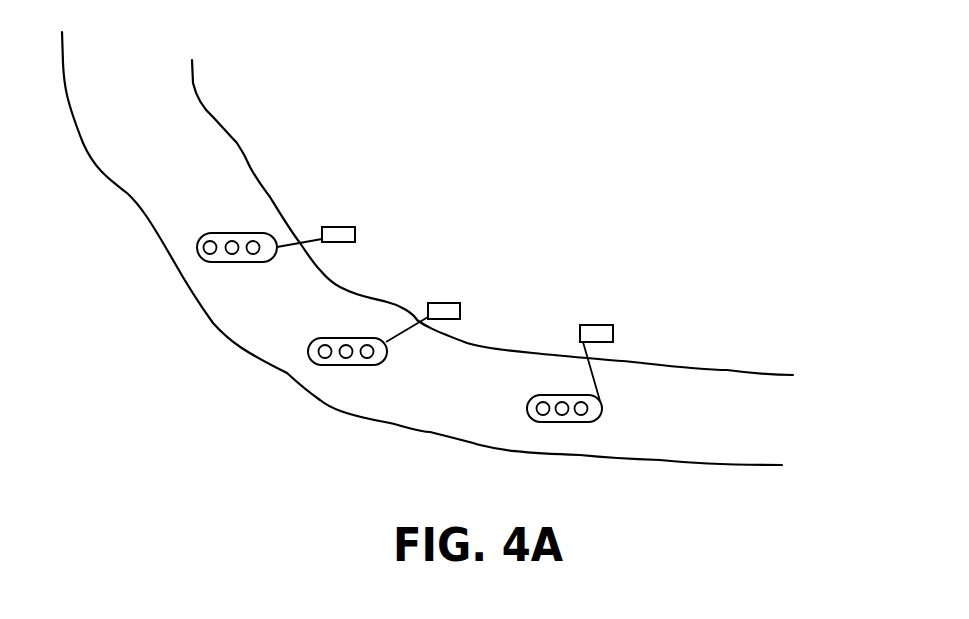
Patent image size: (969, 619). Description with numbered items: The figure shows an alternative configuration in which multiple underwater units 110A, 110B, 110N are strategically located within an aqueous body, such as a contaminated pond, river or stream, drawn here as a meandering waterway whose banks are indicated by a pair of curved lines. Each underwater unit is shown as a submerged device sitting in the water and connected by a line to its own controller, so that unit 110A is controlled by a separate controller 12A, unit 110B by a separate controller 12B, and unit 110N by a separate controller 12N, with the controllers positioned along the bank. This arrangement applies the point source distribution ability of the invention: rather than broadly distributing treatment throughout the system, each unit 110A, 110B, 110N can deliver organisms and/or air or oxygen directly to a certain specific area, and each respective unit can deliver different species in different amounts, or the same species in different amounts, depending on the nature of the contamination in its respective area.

The underwater unit 110A is at (220, 233).
The underwater unit 110B is at (377, 360).
The underwater unit 110N is at (597, 410).
The controller 12A is at (352, 230).
The controller 12B is at (450, 308).
The controller 12N is at (607, 332).